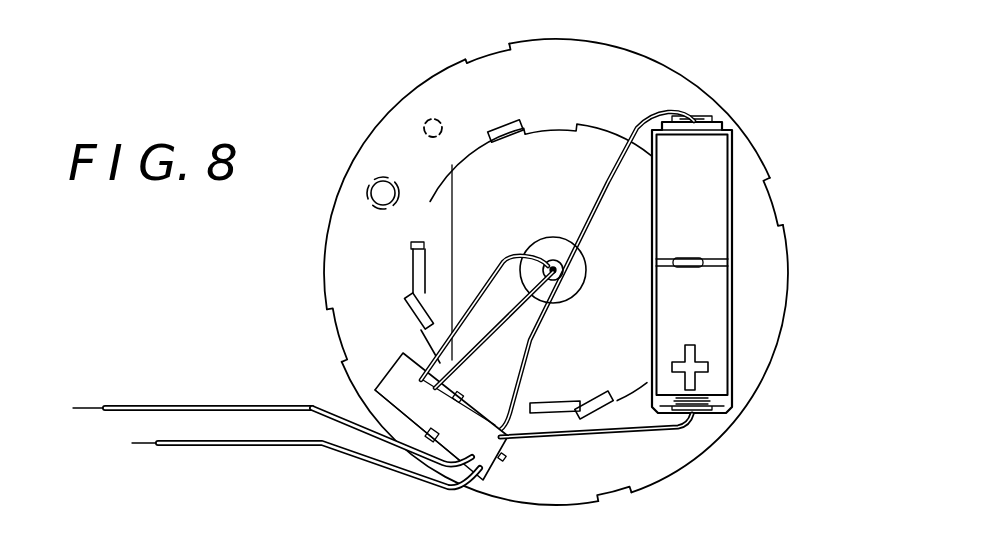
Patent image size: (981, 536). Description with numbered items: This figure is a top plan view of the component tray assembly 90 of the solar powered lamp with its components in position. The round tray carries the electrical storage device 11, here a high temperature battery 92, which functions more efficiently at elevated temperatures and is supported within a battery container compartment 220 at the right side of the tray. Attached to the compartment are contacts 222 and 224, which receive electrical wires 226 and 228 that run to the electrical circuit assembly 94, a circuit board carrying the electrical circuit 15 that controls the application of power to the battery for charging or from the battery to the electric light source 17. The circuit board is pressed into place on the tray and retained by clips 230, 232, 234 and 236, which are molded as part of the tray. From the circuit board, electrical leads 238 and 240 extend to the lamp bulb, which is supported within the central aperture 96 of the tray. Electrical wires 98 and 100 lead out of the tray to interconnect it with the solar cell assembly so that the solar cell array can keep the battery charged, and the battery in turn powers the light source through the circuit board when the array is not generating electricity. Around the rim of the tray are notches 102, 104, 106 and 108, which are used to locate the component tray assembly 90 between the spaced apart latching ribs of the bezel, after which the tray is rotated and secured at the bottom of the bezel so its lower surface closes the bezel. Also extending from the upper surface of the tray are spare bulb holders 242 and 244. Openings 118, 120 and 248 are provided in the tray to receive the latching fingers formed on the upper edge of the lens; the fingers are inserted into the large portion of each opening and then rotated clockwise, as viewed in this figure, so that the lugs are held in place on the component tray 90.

The component tray assembly 90 is at (782, 348).
The high temperature battery 92 is at (705, 298).
The electrical circuit assembly 94 is at (377, 386).
The central aperture 96 is at (553, 248).
The electrical wire 98 is at (140, 445).
The electrical wire 100 is at (92, 408).
The notch 102 is at (768, 193).
The notch 104 is at (618, 493).
The notch 106 is at (330, 313).
The notch 108 is at (468, 63).
The electrical storage device 11 is at (728, 326).
The electrical circuit 15 is at (345, 420).
The electric light source 17 is at (578, 260).
The opening 118 is at (506, 126).
The opening 120 is at (543, 404).
The battery container compartment 220 is at (735, 131).
The contact 222 is at (693, 420).
The contact 224 is at (706, 104).
The electrical wire 226 is at (632, 430).
The electrical wire 228 is at (658, 112).
The clip 230 is at (504, 459).
The clip 232 is at (462, 398).
The clip 234 is at (376, 388).
The clip 236 is at (430, 439).
The electrical lead 238 is at (492, 270).
The electrical lead 240 is at (556, 305).
The spare bulb holder 242 is at (380, 183).
The spare bulb holder 244 is at (430, 122).
The opening 248 is at (412, 244).